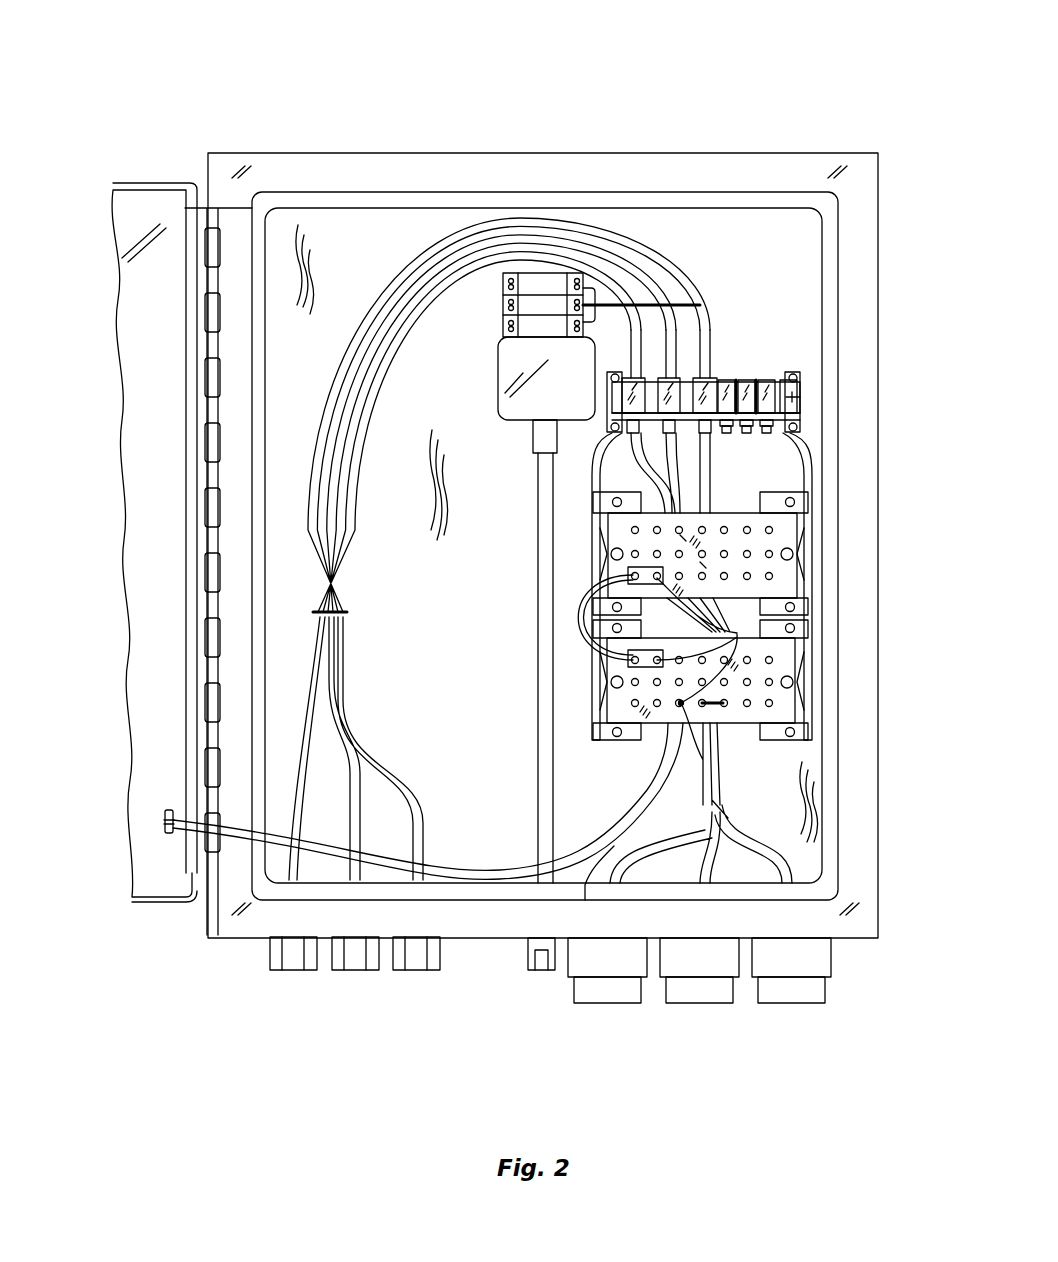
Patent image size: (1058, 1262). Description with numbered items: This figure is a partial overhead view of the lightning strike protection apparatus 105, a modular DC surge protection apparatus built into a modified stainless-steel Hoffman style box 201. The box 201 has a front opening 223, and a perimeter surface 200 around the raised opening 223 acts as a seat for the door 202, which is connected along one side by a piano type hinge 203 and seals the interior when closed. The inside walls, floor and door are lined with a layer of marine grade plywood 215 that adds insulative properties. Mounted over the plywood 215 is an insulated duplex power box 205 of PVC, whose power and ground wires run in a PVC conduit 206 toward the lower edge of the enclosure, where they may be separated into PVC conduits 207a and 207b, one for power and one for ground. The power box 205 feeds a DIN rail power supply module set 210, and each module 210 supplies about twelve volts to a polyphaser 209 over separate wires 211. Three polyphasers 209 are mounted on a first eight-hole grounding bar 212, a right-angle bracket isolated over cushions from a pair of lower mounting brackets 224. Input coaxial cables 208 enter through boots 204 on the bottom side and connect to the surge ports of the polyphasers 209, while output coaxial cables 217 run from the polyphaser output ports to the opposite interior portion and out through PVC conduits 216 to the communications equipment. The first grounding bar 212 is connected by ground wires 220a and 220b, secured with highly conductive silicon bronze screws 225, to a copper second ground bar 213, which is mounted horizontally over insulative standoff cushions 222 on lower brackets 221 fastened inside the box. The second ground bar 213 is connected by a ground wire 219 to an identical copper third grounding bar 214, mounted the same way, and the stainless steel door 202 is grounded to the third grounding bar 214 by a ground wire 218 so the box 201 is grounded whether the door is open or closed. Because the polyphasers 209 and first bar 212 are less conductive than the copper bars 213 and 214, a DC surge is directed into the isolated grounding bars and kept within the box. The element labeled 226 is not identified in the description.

The lightning strike protection apparatus 105 is at (533, 76).
The perimeter surface 200 is at (861, 331).
The box 201 is at (682, 152).
The door 202 is at (150, 183).
The piano type hinge 203 is at (206, 440).
The boots 204 is at (838, 970).
The insulated duplex power box 205 is at (497, 380).
The PVC conduit 206 is at (534, 666).
The PVC conduit for power 207a is at (527, 947).
The PVC conduit for ground 207b is at (585, 900).
The input coaxial cables 208 is at (755, 847).
The polyphasers 209 is at (722, 356).
The DIN rail power supply module set 210 is at (492, 308).
The wires 211 is at (606, 296).
The first grounding bar 212 is at (794, 397).
The second ground bar 213 is at (712, 512).
The third grounding bar 214 is at (662, 737).
The marine grade plywood 215 is at (366, 256).
The PVC conduits 216 is at (252, 958).
The output coaxial cables 217 is at (422, 822).
The ground wire 218 is at (612, 834).
The ground wire 219 is at (575, 586).
The ground wire 220a is at (612, 434).
The ground wire 220b is at (812, 460).
The lower brackets 221 is at (790, 741).
The insulative standoff cushions 222 is at (592, 681).
The opening 223 is at (516, 190).
The lower mounting brackets 224 is at (616, 373).
The silicon bronze screws 225 is at (707, 642).
The small fuses 226 is at (746, 376).